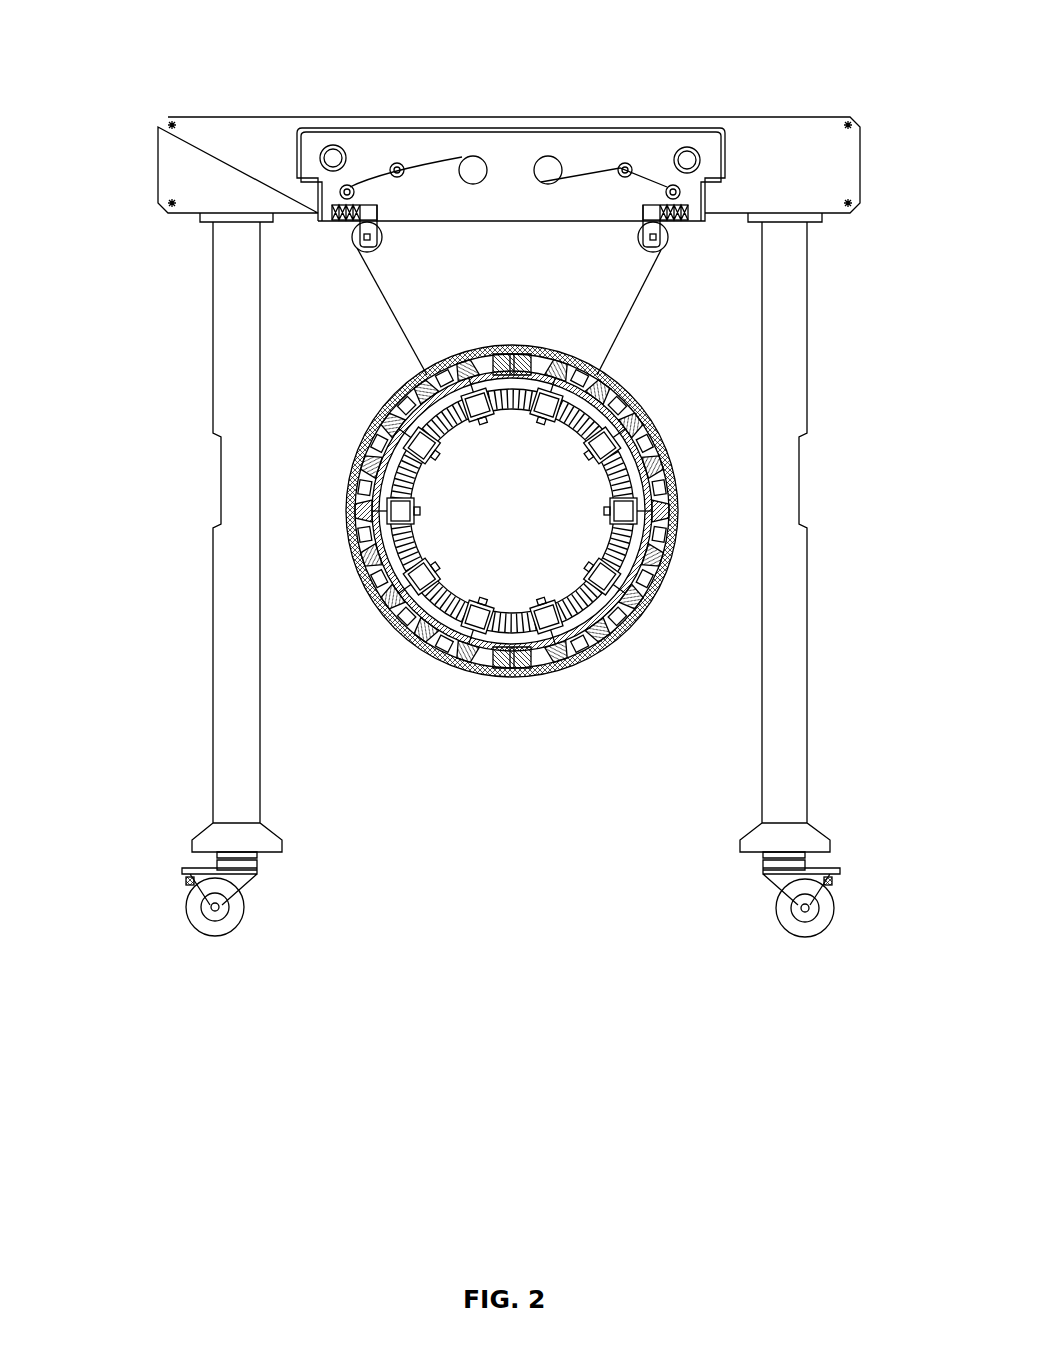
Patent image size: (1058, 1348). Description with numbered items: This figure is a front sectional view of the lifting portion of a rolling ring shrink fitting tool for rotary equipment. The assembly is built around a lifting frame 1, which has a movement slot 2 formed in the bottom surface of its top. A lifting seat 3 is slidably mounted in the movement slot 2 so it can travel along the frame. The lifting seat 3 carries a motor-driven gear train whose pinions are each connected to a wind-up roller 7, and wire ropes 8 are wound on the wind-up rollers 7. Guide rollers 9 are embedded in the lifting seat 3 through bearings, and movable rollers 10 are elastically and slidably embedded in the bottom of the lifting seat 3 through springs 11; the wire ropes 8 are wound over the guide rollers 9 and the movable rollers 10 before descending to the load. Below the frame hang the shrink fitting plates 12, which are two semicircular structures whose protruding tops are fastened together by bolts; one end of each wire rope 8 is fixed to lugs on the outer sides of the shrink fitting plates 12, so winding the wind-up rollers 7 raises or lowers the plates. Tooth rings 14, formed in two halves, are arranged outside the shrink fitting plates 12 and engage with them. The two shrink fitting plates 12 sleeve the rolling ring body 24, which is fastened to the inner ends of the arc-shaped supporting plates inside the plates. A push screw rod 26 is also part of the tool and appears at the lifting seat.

The lifting frame 1 is at (200, 177).
The movement slot 2 is at (422, 132).
The lifting seat 3 is at (470, 200).
The wind-up roller 7 is at (548, 172).
The wire rope 8 is at (377, 285).
The guide roller 9 is at (636, 163).
The movable roller 10 is at (665, 242).
The spring 11 is at (687, 218).
The shrink fitting plate 12 is at (348, 528).
The tooth ring 14 is at (540, 677).
The rolling ring body 24 is at (657, 570).
The push screw rod 26 is at (330, 152).